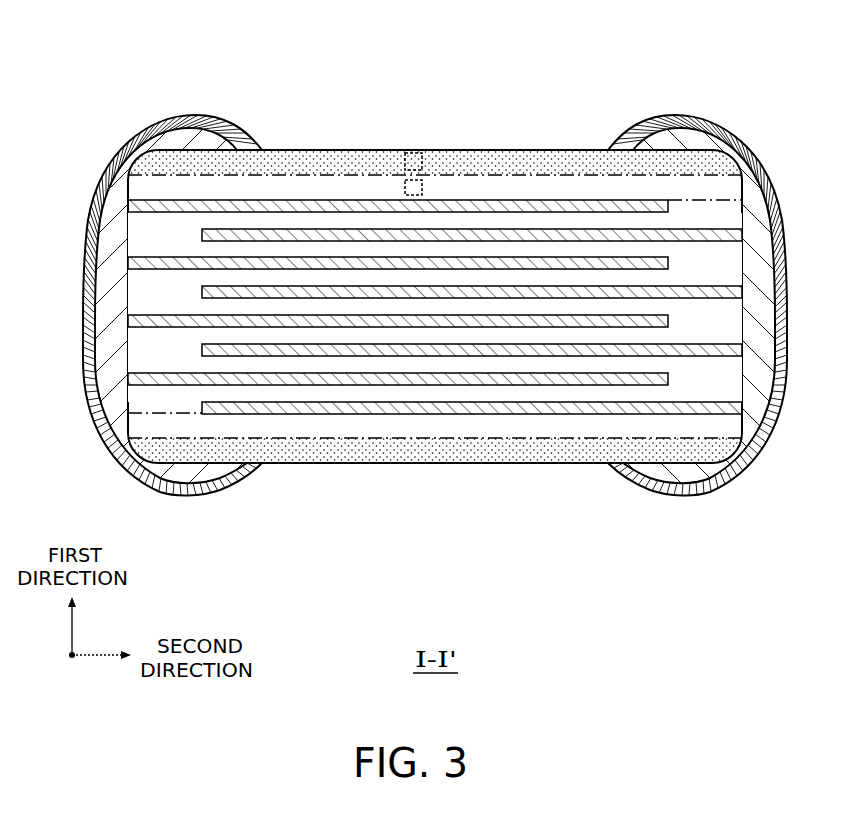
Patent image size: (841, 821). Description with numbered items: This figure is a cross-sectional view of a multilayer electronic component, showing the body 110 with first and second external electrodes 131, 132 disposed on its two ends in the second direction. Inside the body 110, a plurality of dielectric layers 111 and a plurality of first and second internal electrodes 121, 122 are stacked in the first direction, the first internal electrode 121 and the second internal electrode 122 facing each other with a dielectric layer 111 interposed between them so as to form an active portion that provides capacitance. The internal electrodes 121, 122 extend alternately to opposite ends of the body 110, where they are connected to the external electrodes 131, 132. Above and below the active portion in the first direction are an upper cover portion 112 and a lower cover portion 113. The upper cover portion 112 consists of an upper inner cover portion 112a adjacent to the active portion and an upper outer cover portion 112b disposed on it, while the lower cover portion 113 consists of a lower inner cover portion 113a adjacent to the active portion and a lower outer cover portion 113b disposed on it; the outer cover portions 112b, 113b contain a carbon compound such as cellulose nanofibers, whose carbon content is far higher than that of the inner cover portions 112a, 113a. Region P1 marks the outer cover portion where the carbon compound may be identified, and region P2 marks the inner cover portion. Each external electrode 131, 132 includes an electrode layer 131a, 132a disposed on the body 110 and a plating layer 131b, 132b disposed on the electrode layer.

The body 110 is at (576, 150).
The dielectric layer 111 is at (283, 248).
The upper cover portion 112 is at (435, 111).
The upper inner cover portion 112a is at (490, 185).
The upper outer cover portion 112b is at (540, 162).
The lower cover portion 113 is at (435, 503).
The lower inner cover portion 113a is at (460, 430).
The lower outer cover portion 113b is at (518, 450).
The first internal electrode 121 is at (315, 203).
The second internal electrode 122 is at (355, 232).
The first external electrode 131 is at (176, 354).
The electrode layer 131a is at (165, 556).
The plating layer 131b is at (180, 495).
The second external electrode 132 is at (692, 354).
The electrode layer 132a is at (705, 554).
The plating layer 132b is at (690, 497).
The region P1 is at (414, 153).
The region P2 is at (422, 188).